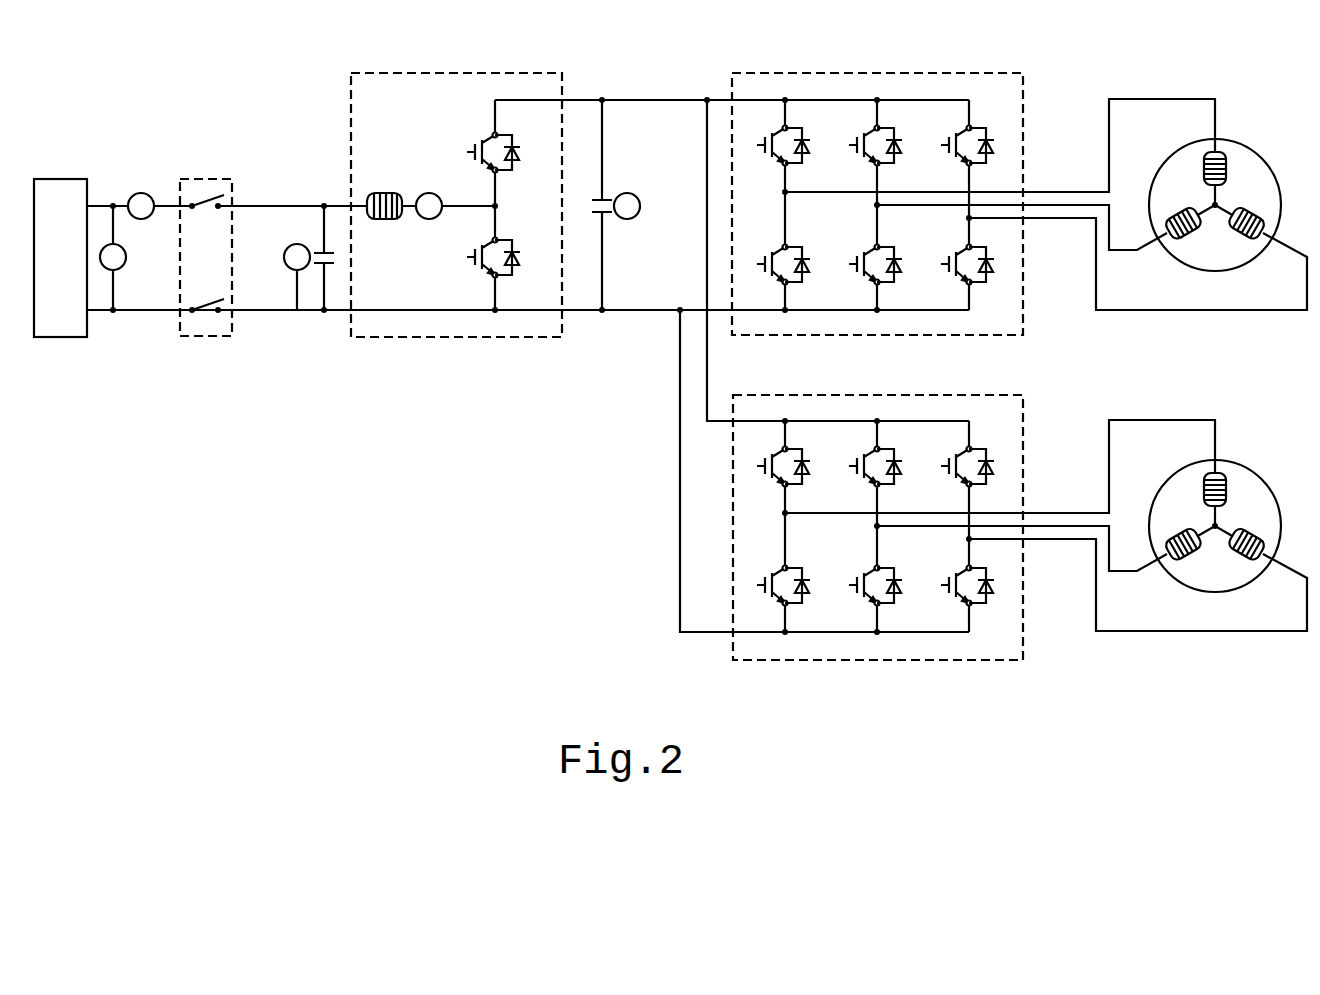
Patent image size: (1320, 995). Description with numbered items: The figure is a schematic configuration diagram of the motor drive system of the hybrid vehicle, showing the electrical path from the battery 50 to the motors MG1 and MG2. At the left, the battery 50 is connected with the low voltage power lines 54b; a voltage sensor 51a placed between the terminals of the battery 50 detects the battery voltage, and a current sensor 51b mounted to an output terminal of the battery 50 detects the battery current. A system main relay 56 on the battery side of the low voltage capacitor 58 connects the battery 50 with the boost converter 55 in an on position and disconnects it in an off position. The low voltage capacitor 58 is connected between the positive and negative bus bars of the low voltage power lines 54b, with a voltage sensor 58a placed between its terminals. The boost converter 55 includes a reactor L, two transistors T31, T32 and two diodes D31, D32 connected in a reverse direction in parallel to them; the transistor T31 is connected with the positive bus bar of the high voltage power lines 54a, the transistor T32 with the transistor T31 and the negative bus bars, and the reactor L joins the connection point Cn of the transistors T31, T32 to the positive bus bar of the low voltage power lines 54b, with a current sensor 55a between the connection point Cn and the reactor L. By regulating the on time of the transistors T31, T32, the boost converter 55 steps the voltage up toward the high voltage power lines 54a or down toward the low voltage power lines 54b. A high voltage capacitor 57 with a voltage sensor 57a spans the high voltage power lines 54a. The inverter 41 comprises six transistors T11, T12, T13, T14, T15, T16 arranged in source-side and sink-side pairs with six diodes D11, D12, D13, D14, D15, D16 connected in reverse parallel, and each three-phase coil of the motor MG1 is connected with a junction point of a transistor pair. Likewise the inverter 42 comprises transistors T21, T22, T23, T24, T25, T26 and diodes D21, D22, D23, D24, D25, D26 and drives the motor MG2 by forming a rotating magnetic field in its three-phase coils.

The battery 50 is at (60, 178).
The voltage sensor 51a is at (119, 269).
The current sensor 51b is at (141, 193).
The high voltage power lines 54a is at (692, 309).
The low voltage power lines 54b is at (278, 312).
The boost converter 55 is at (462, 73).
The current sensor 55a is at (429, 193).
The system main relay 56 is at (206, 178).
The high voltage capacitor 57 is at (600, 198).
The voltage sensor 57a is at (627, 192).
The low voltage capacitor 58 is at (321, 240).
The voltage sensor 58a is at (297, 244).
The reactor L is at (382, 192).
The connection point Cn is at (497, 206).
The transistor T31 is at (480, 132).
The transistor T32 is at (480, 237).
The diode D31 is at (517, 160).
The diode D32 is at (517, 265).
The inverter 41 is at (930, 73).
The inverter 42 is at (878, 504).
The transistor T11 is at (770, 125).
The transistor T12 is at (862, 125).
The transistor T13 is at (954, 125).
The transistor T14 is at (770, 244).
The transistor T15 is at (862, 244).
The transistor T16 is at (954, 244).
The diode D11 is at (807, 153).
The diode D12 is at (899, 153).
The diode D13 is at (991, 153).
The diode D14 is at (807, 272).
The diode D15 is at (899, 272).
The diode D16 is at (991, 272).
The transistor T21 is at (762, 454).
The transistor T22 is at (854, 454).
The transistor T23 is at (946, 454).
The transistor T24 is at (762, 573).
The transistor T25 is at (854, 573).
The transistor T26 is at (946, 573).
The diode D21 is at (808, 480).
The diode D22 is at (900, 480).
The diode D23 is at (992, 480).
The diode D24 is at (808, 599).
The diode D25 is at (900, 599).
The diode D26 is at (992, 599).
The motor MG1 is at (1245, 143).
The motor MG2 is at (1046, 519).